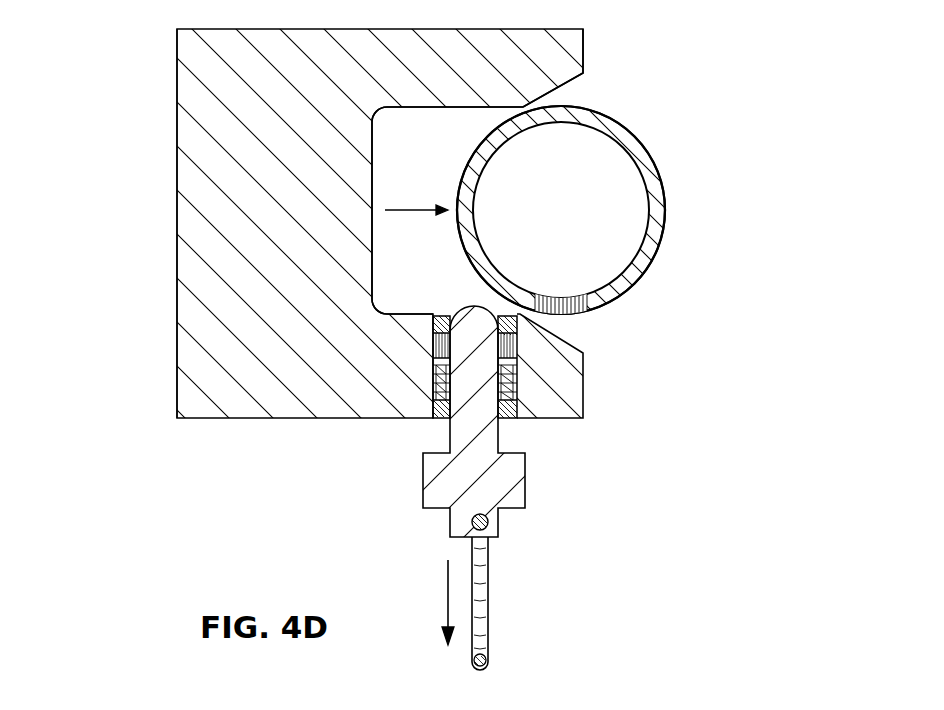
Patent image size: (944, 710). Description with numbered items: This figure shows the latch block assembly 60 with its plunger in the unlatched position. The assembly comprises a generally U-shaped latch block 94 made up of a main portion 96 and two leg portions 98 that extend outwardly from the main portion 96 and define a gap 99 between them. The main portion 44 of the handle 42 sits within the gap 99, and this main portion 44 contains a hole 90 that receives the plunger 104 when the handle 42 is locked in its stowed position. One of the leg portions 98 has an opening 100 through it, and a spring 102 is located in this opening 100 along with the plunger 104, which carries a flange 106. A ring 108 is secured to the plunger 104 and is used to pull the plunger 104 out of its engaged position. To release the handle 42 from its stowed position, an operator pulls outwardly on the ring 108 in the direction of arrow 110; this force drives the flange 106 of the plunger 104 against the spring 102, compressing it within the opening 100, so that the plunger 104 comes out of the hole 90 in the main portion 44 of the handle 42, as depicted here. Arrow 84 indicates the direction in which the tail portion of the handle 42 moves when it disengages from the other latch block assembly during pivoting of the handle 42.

The latch block assembly 60 is at (120, 99).
The latch block 94 is at (177, 205).
The main portion 96 is at (180, 165).
The gap 99 is at (380, 113).
The leg portions 98 is at (585, 49).
The arrow 84 is at (408, 209).
The handle 42 is at (667, 222).
The main portion 44 is at (667, 179).
The hole 90 is at (541, 297).
The flange 106 is at (479, 405).
The opening 100 is at (440, 348).
The spring 102 is at (440, 388).
The plunger 104 is at (526, 491).
The ring 108 is at (490, 595).
The arrow 110 is at (446, 590).